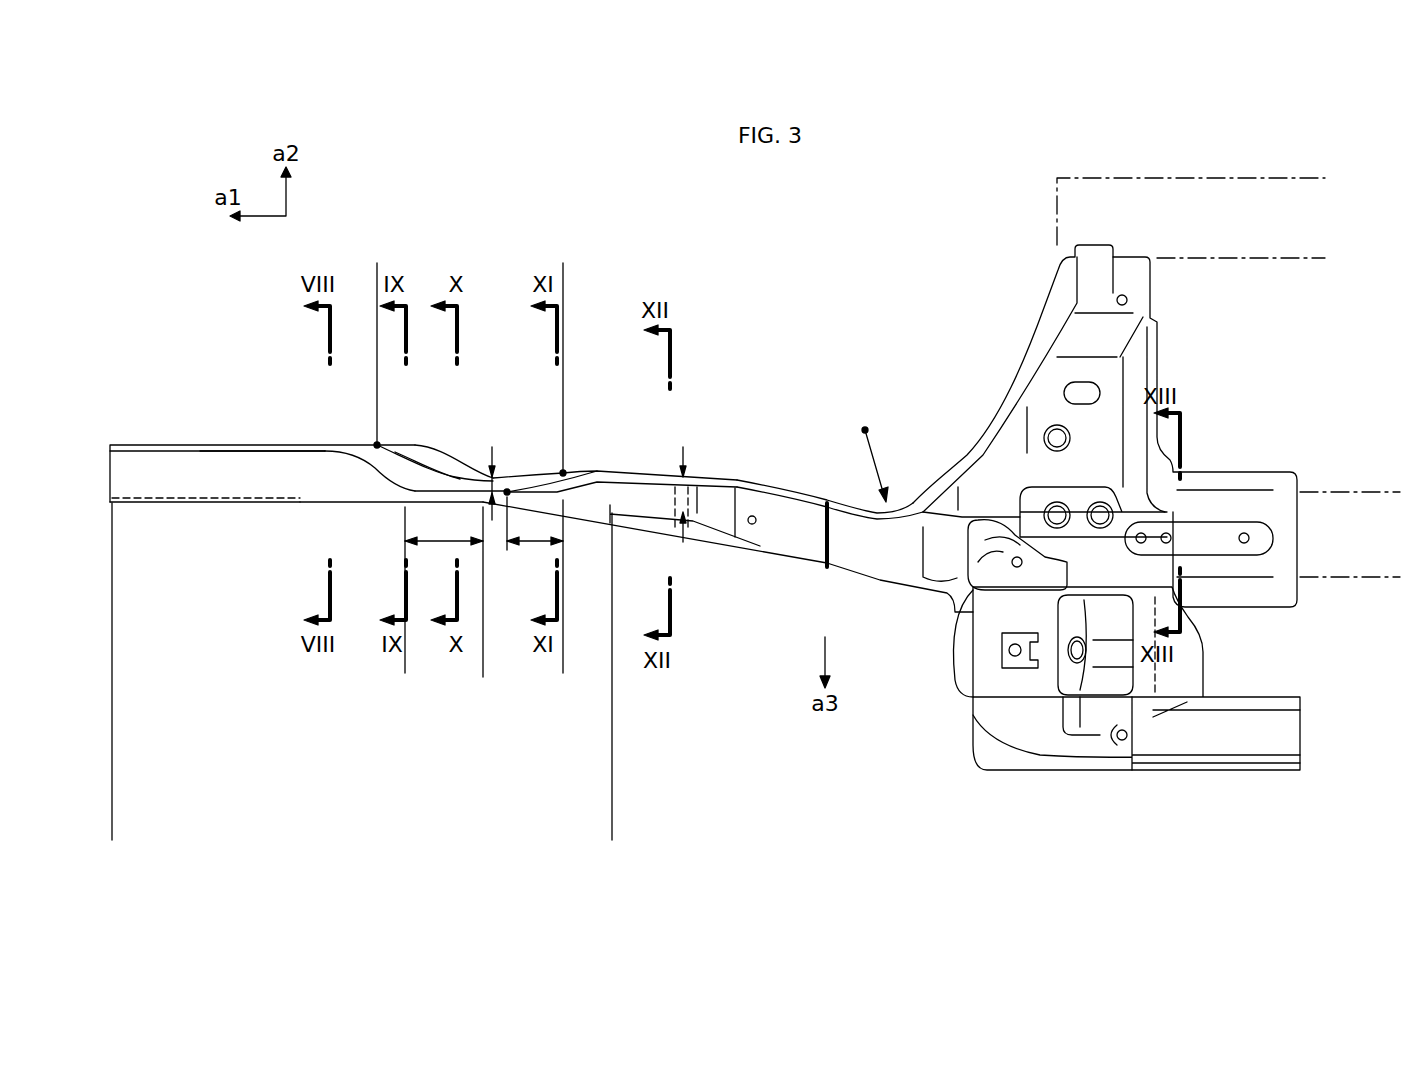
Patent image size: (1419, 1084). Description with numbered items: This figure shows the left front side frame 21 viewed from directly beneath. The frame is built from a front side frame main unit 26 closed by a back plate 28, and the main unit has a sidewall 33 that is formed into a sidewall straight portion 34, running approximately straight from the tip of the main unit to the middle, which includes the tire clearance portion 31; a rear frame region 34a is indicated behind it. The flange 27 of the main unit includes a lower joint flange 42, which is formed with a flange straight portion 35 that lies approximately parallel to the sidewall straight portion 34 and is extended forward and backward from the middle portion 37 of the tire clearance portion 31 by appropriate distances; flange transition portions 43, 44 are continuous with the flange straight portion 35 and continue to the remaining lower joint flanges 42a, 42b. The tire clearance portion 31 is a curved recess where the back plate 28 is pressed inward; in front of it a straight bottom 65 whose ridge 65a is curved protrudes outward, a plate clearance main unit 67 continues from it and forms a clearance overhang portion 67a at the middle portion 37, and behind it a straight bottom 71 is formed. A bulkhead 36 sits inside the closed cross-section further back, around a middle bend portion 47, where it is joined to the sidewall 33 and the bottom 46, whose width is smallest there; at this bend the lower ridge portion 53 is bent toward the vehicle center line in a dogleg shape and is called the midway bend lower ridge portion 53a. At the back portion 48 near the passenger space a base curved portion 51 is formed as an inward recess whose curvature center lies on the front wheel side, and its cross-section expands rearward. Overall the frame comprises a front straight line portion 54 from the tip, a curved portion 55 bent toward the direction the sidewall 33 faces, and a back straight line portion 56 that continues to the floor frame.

The front side frame 21 is at (221, 345).
The front side frame main unit 26 is at (233, 503).
The flange 27 is at (202, 455).
The back plate 28 is at (300, 447).
The tire clearance portion 31 is at (563, 263).
The sidewall 33 is at (205, 556).
The sidewall straight portion 34 is at (483, 722).
The rear frame portion 34a is at (920, 722).
The flange straight portion 35 is at (405, 664).
The bulkhead 36 is at (672, 480).
The middle portion 37 is at (505, 477).
The lower joint flange 42 is at (217, 506).
The remaining lower joint flange 42a is at (275, 455).
The remaining lower joint flange 42b is at (638, 510).
The flange transition portion 43 is at (368, 477).
The flange transition portion 44 is at (577, 483).
The bottom 46 is at (237, 470).
The middle bend portion 47 is at (700, 527).
The back portion 48 is at (910, 570).
The base curved portion 51 is at (880, 513).
The lower ridge portion 53 is at (313, 505).
The midway bend lower ridge portion 53a is at (655, 555).
The front straight line portion 54 is at (112, 839).
The curved portion 55 is at (922, 839).
The back straight line portion 56 is at (922, 597).
The straight bottom 65 is at (412, 470).
The ridge 65a is at (447, 472).
The plate clearance main unit 67 is at (352, 440).
The clearance overhang portion 67a is at (473, 477).
The straight bottom 71 is at (578, 474).